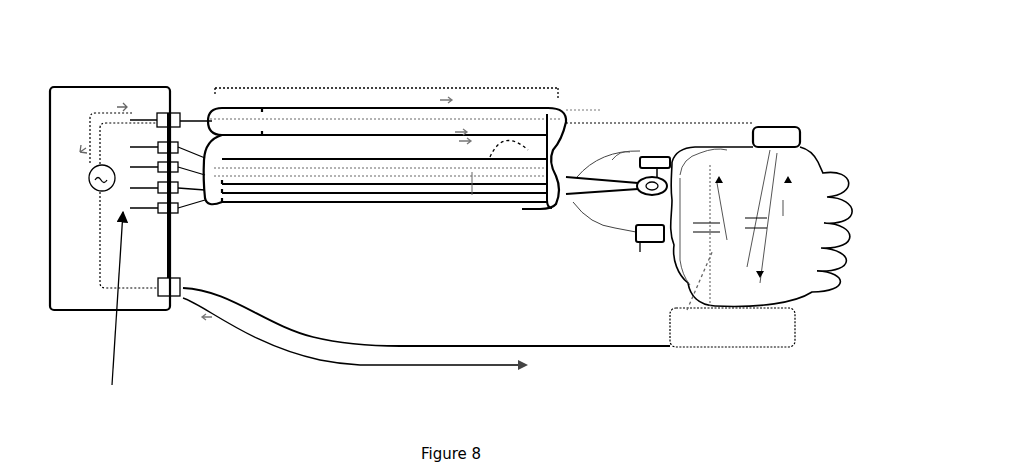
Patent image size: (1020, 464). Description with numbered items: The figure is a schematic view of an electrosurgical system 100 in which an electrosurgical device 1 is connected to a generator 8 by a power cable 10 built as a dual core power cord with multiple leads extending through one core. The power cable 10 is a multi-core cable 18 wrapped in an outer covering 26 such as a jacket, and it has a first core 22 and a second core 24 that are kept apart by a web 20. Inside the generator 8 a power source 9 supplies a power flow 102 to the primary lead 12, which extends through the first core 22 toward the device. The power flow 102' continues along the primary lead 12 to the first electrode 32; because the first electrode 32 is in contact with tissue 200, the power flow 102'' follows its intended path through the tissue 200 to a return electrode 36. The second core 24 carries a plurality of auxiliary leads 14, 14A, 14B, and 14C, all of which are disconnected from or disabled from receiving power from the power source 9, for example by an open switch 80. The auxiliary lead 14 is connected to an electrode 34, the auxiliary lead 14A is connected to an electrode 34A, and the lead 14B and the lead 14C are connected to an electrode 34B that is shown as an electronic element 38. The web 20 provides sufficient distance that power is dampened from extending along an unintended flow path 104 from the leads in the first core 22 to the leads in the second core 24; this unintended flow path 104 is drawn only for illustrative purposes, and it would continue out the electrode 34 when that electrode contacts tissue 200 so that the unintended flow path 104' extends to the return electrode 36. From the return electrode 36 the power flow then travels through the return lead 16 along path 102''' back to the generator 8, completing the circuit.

The electrosurgical device 1 is at (676, 106).
The generator 8 is at (137, 337).
The power source 9 is at (92, 192).
The power cable 10 is at (387, 91).
The primary lead 12 is at (193, 112).
The auxiliary lead 14 is at (183, 150).
The auxiliary lead 14A is at (215, 200).
The auxiliary lead 14B is at (197, 195).
The auxiliary lead 14C is at (183, 200).
The return lead 16 is at (192, 293).
The multi-core cable 18 is at (264, 95).
The web 20 is at (490, 157).
The first core 22 is at (575, 128).
The second core 24 is at (570, 214).
The outer covering 26 is at (281, 133).
The first electrode 32 is at (788, 132).
The electrode 34 is at (663, 159).
The electrode 34A is at (643, 191).
The electrode 34B is at (647, 240).
The return electrode 36 is at (722, 332).
The electronic element 38 is at (648, 252).
The open switch 80 is at (113, 318).
The electrosurgical system 100 is at (777, 76).
The power flow 102 is at (100, 252).
The power flow 102' is at (467, 97).
The power flow 102'' is at (841, 208).
The path 102''' is at (360, 389).
The unintended flow path 104 is at (443, 229).
The unintended flow path 104' is at (466, 357).
The tissue 200 is at (798, 280).